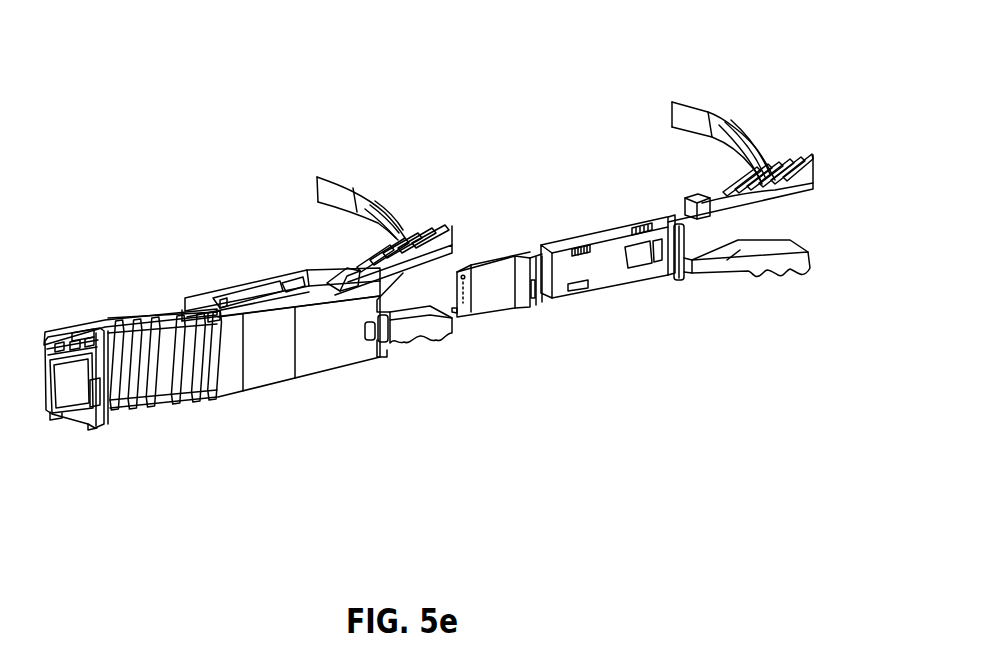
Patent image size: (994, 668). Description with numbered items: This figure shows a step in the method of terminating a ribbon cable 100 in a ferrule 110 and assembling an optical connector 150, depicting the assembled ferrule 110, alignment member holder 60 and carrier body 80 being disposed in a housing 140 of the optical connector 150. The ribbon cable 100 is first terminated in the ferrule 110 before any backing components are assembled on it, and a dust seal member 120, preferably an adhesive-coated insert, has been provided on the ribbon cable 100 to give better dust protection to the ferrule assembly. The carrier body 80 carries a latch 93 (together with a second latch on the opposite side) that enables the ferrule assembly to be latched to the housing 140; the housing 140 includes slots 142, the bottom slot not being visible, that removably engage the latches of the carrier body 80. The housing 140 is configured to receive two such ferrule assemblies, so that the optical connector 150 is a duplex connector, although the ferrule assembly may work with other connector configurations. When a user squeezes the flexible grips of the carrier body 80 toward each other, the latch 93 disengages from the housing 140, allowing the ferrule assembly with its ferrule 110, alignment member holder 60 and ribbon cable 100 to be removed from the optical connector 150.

The optical connector 150 is at (214, 80).
The housing 140 is at (268, 380).
The slots 142 is at (357, 278).
The ferrule 110 is at (497, 312).
The alignment member holder 60 is at (537, 302).
The carrier body 80 is at (607, 277).
The dust seal member 120 is at (633, 247).
The latch 93 is at (688, 200).
The ribbon cable 100 is at (705, 114).